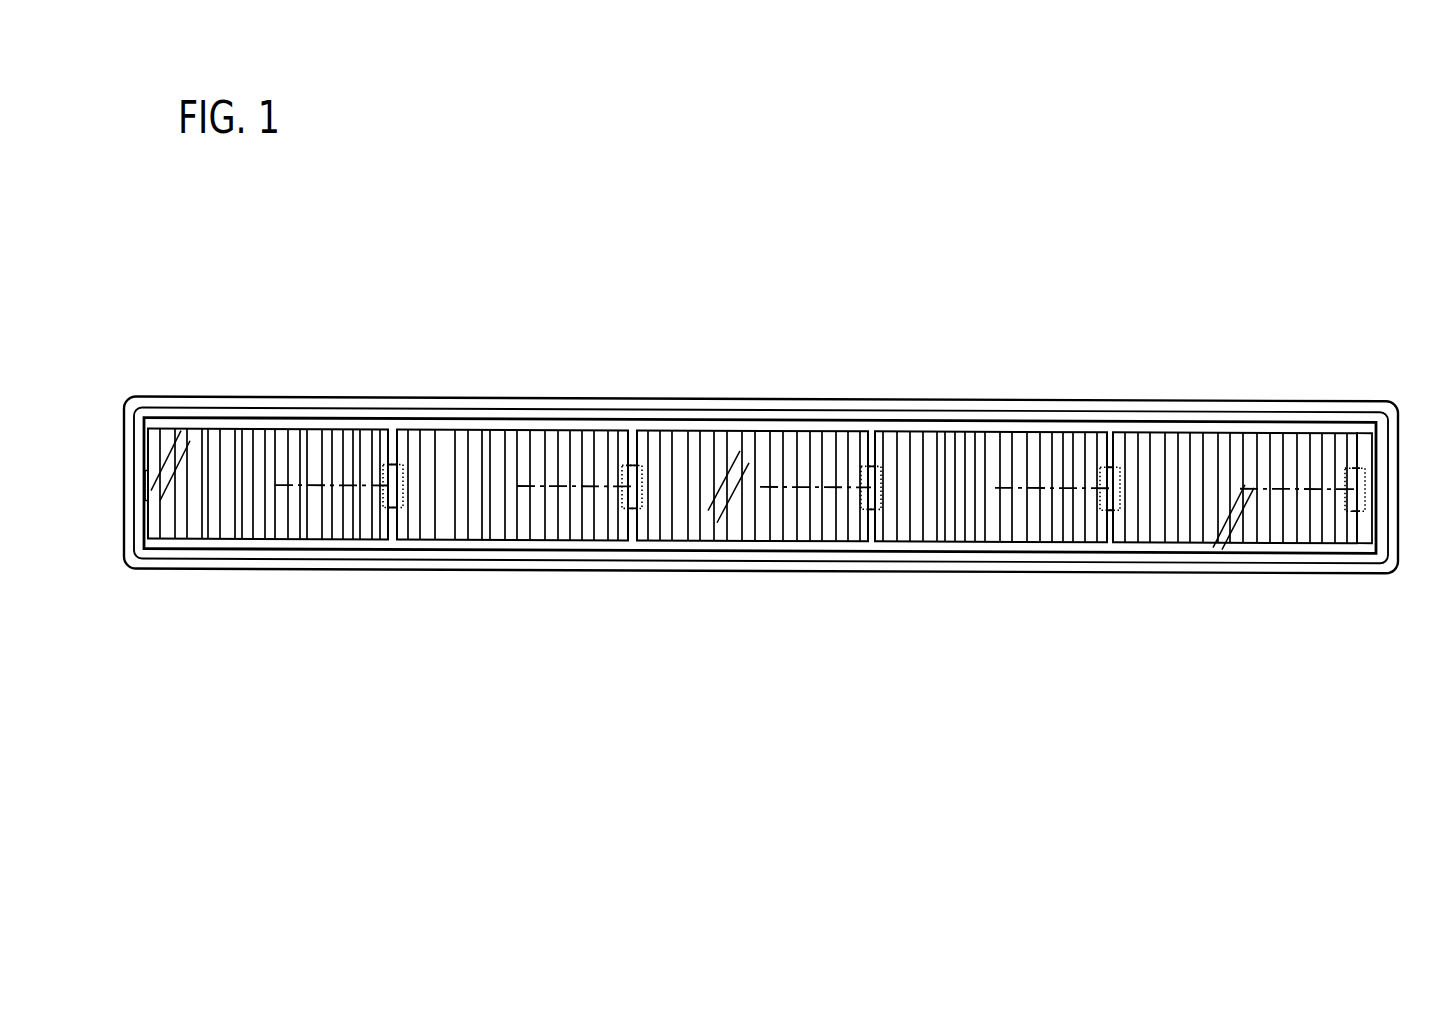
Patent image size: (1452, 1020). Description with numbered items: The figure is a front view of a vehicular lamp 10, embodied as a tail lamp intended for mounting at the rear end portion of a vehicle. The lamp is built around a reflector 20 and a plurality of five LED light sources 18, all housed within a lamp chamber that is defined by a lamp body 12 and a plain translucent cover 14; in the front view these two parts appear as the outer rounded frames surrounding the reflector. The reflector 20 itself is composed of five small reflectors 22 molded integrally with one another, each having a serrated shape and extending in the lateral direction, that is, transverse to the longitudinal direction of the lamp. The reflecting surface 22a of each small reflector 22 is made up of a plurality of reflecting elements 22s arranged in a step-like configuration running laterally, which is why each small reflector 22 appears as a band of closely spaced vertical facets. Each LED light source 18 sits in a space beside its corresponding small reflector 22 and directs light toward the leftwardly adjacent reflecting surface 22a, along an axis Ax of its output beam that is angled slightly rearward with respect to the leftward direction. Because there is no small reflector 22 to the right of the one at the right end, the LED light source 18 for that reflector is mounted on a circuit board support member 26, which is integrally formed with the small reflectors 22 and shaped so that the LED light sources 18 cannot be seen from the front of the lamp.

The vehicular lamp 10 is at (1027, 220).
The lamp body 12 is at (1156, 396).
The plain translucent cover 14 is at (1156, 396).
The LED light source 18 is at (880, 460).
The reflector 20 is at (1053, 417).
The small reflector 22 is at (340, 549).
The reflecting surface 22a is at (517, 443).
The reflecting element 22s is at (490, 515).
The circuit board support member 26 is at (1367, 445).
The axis of the output beams Ax is at (785, 477).